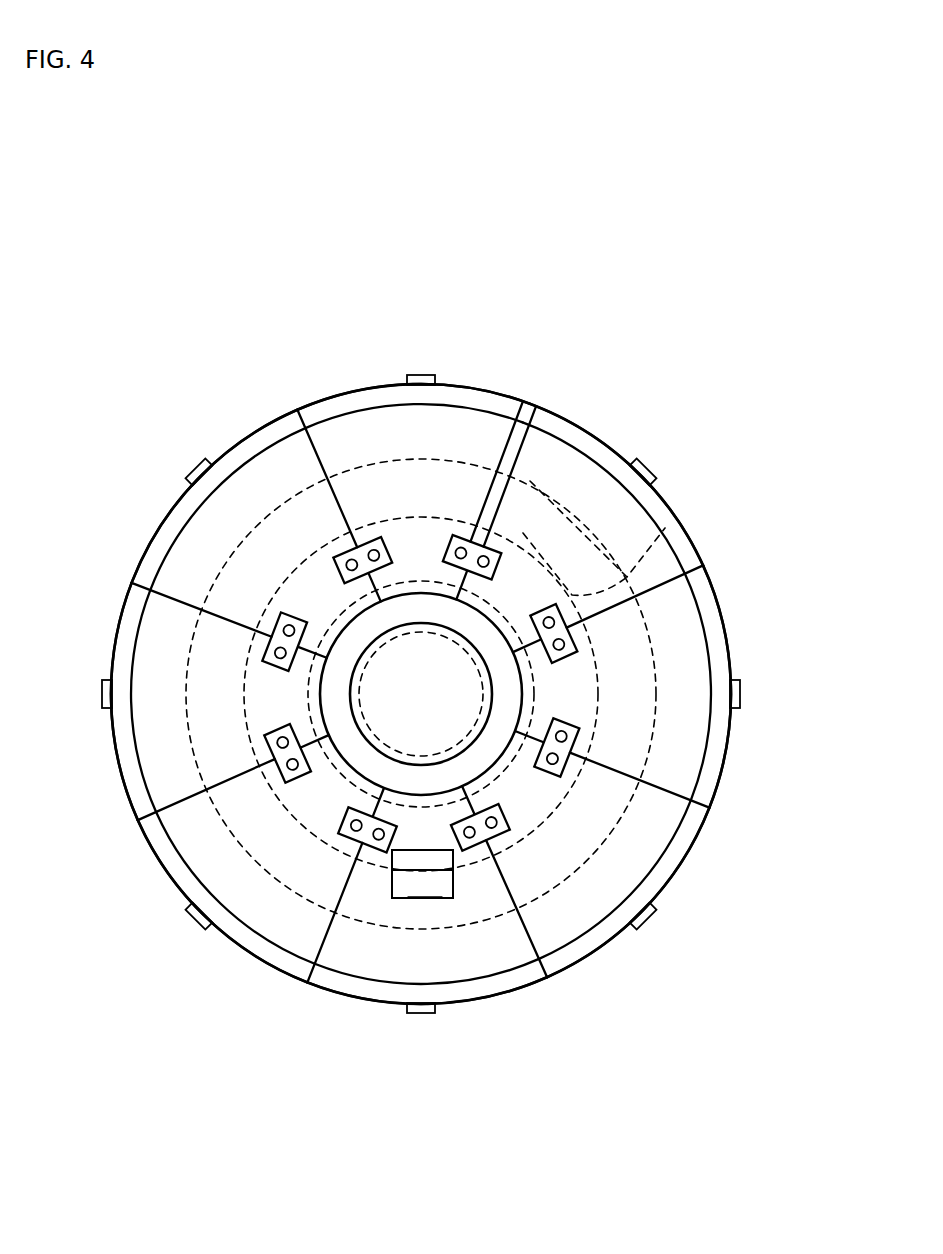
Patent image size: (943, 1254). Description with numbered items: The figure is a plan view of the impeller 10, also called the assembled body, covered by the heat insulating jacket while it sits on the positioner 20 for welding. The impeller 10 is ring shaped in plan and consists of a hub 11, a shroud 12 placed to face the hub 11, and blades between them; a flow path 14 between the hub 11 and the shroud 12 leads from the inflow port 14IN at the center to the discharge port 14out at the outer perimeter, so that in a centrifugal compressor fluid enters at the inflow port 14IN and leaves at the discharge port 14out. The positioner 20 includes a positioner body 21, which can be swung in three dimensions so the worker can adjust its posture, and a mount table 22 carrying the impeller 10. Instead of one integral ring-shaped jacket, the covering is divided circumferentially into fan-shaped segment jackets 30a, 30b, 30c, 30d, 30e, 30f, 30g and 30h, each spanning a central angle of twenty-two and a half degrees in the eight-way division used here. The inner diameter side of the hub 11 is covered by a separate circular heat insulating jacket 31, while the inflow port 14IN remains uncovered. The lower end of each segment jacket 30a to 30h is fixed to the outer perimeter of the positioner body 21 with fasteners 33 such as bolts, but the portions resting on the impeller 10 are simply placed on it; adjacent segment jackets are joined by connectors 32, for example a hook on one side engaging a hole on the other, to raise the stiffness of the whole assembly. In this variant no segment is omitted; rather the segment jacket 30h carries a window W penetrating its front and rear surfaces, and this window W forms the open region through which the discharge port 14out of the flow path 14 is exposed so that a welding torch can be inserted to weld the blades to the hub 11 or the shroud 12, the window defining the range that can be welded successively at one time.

The impeller (assembled body) 10 is at (524, 530).
The hub 11 is at (508, 747).
The shroud 12 is at (670, 523).
The flow path 14 is at (327, 1070).
The inflow port 14IN is at (440, 596).
The discharge port 14out is at (370, 860).
The positioner 20 is at (484, 694).
The positioner body 21 is at (730, 668).
The mount table 22 is at (657, 660).
The segment jacket 30a is at (197, 862).
The segment jacket 30b is at (168, 655).
The segment jacket 30c is at (252, 478).
The segment jacket 30d is at (368, 425).
The segment jacket 30e is at (603, 485).
The segment jacket 30f is at (683, 748).
The segment jacket 30g is at (583, 910).
The segment jacket 30h is at (462, 967).
The heat insulating jacket 31 is at (434, 738).
The connector 32 is at (486, 548).
The fastener 33 is at (423, 380).
The window W is at (398, 887).